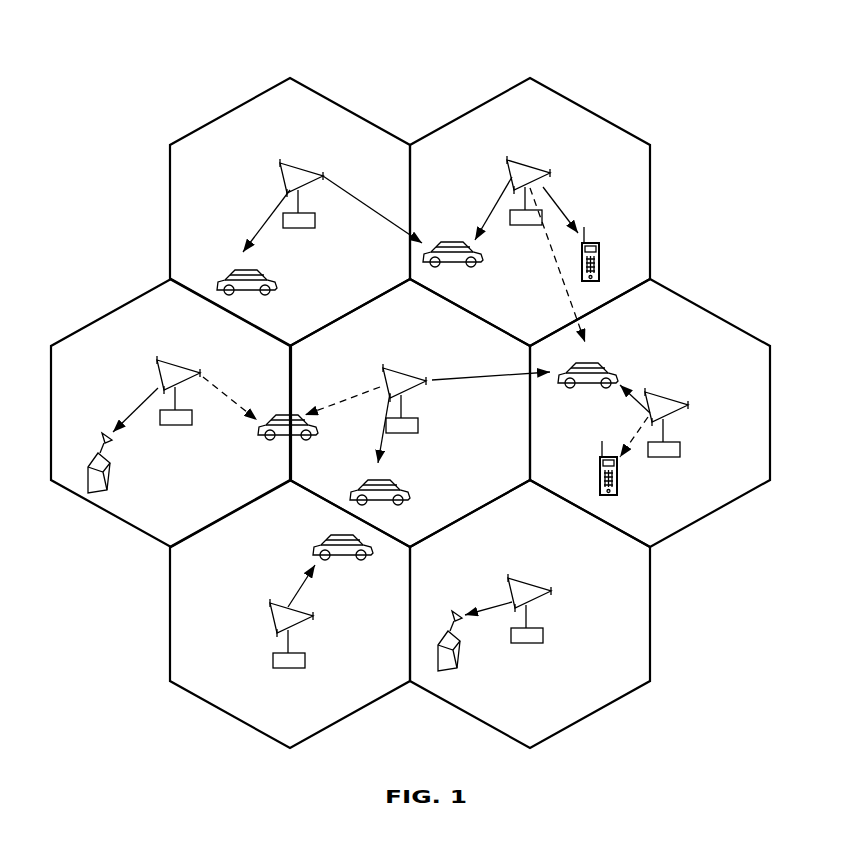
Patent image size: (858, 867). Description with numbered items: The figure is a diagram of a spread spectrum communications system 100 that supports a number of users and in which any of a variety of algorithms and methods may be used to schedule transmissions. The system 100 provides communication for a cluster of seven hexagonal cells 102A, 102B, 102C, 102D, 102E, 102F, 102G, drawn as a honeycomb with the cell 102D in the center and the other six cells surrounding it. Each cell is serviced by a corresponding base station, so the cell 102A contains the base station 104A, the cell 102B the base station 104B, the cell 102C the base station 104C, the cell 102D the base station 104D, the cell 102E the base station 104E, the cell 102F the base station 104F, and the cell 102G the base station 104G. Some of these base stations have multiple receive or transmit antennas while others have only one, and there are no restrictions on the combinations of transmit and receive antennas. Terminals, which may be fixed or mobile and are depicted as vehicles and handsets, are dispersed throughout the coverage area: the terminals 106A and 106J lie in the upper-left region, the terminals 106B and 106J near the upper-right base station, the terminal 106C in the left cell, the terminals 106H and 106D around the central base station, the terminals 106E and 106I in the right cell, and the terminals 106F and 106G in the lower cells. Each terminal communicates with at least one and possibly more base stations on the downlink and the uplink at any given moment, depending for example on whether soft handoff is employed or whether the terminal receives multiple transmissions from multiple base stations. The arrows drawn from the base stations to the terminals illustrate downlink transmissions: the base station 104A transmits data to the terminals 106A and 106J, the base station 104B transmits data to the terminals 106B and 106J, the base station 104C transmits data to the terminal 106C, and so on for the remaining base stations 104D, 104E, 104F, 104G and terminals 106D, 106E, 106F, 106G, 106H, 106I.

The communications system 100 is at (700, 61).
The cell 102A is at (232, 107).
The cell 102B is at (580, 107).
The cell 102C is at (106, 314).
The cell 102D is at (433, 306).
The cell 102E is at (771, 406).
The cell 102F is at (173, 625).
The cell 102G is at (655, 590).
The base station 104A is at (289, 163).
The base station 104B is at (515, 170).
The base station 104C is at (166, 362).
The base station 104D is at (394, 372).
The base station 104E is at (652, 392).
The base station 104F is at (271, 606).
The base station 104G is at (518, 583).
The terminal 106A is at (245, 270).
The terminal 106B is at (590, 242).
The terminal 106C is at (102, 437).
The terminal 106D is at (378, 477).
The terminal 106E is at (592, 360).
The terminal 106F is at (338, 536).
The terminal 106G is at (450, 612).
The terminal 106H is at (282, 417).
The terminal 106I is at (602, 455).
The terminal 106J is at (460, 245).